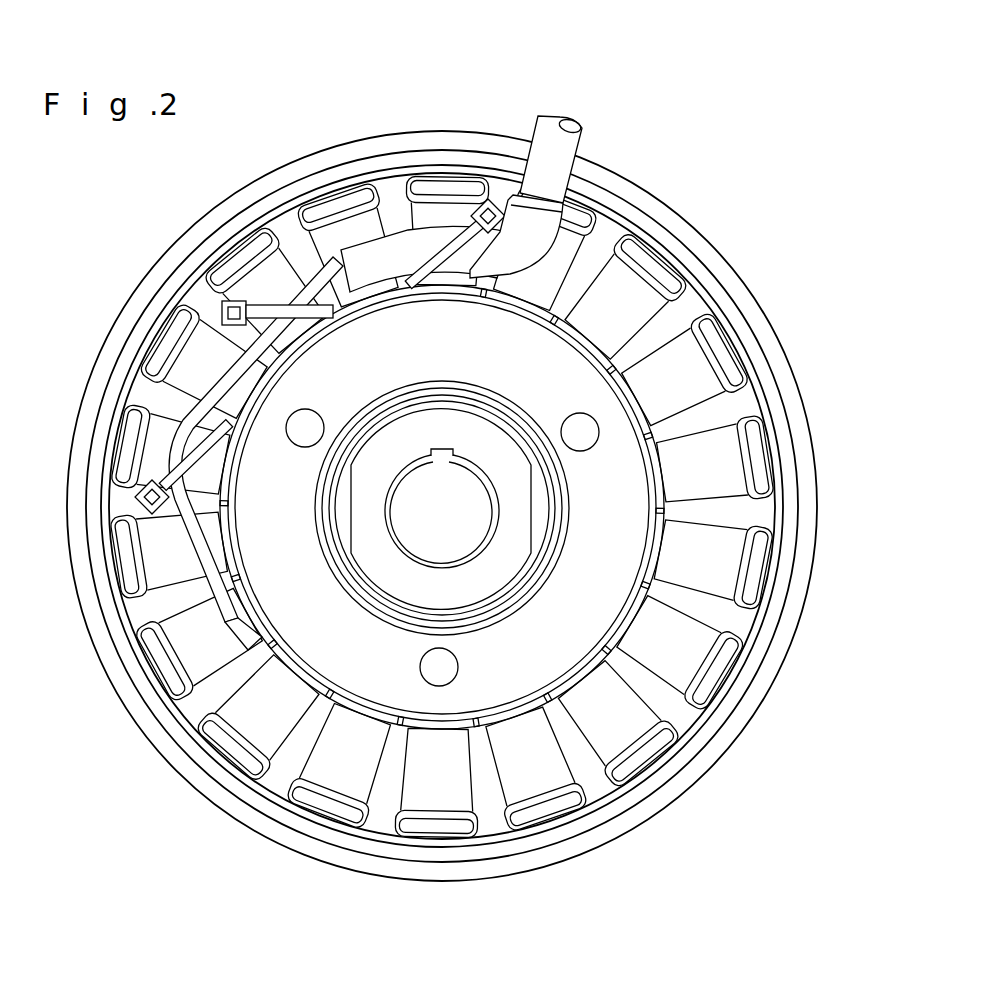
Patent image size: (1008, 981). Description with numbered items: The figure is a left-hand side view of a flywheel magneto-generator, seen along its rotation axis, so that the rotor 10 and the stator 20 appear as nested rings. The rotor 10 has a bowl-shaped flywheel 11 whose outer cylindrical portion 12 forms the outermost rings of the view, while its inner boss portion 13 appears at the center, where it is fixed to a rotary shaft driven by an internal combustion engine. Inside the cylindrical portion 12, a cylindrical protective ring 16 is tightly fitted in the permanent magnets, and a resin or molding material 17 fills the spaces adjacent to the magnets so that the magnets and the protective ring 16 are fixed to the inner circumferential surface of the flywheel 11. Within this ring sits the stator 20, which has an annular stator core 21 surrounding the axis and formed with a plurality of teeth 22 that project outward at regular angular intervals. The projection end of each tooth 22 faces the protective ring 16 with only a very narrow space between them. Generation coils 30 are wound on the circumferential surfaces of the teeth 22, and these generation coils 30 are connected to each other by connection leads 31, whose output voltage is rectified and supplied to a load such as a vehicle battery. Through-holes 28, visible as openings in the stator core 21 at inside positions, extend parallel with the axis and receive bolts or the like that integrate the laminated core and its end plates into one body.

The rotor 10 is at (812, 426).
The flywheel 11 is at (782, 332).
The outer cylindrical portion 12 is at (680, 220).
The inner boss portion 13 is at (497, 561).
The protective ring 16 is at (757, 400).
The molding material 17 is at (713, 288).
The stator 20 is at (280, 632).
The stator core 21 is at (520, 387).
The teeth 22 is at (710, 693).
The through-holes 28 is at (587, 421).
The generation coils 30 is at (417, 213).
The connection leads 31 is at (586, 142).